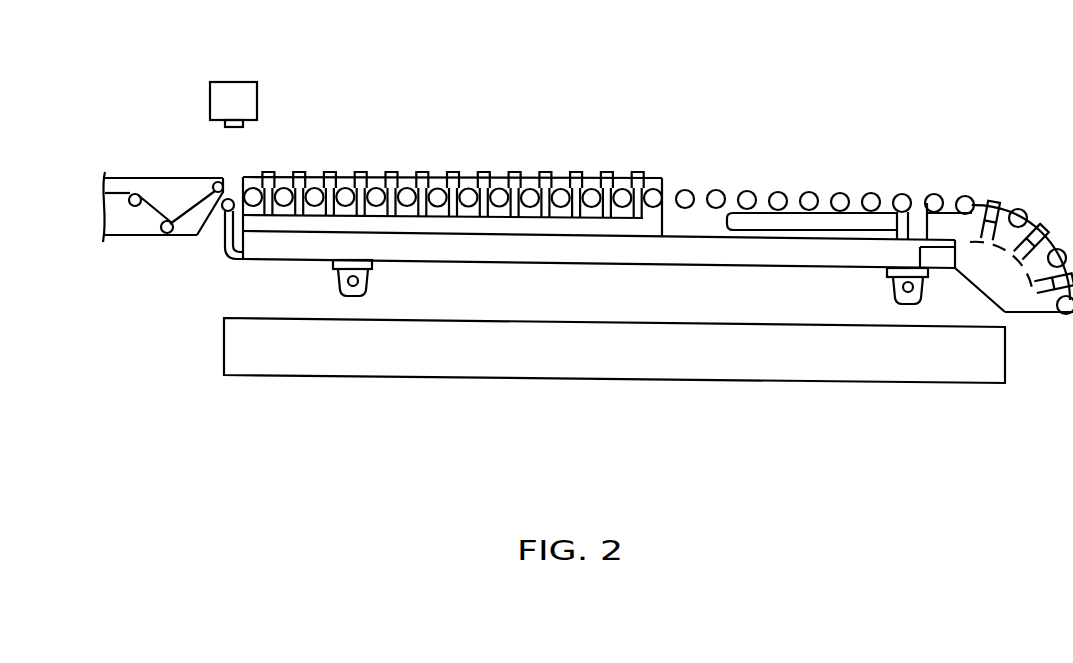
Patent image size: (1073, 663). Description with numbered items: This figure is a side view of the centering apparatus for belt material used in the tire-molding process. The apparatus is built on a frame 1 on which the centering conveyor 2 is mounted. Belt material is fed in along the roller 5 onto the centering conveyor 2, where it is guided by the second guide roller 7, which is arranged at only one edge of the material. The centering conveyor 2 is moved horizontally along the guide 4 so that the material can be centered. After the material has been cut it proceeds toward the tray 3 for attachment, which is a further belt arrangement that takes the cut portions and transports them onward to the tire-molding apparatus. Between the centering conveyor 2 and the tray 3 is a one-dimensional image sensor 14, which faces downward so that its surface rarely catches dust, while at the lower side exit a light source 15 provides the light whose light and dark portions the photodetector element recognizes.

The frame 1 is at (547, 380).
The centering conveyor 2 is at (738, 268).
The tray for attachment 3 is at (185, 177).
The guide 4 is at (355, 296).
The roller 5 is at (692, 190).
The second guide roller 7 is at (360, 177).
The one-dimensional image sensor 14 is at (210, 90).
The light source 15 is at (223, 222).